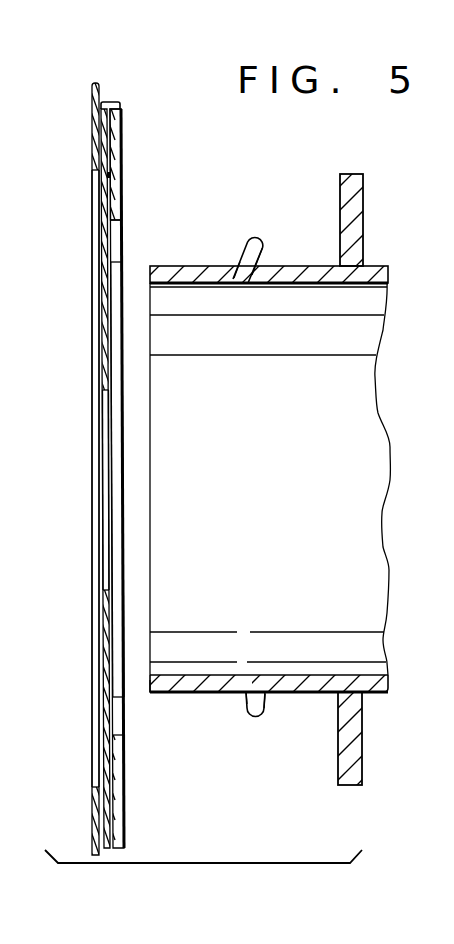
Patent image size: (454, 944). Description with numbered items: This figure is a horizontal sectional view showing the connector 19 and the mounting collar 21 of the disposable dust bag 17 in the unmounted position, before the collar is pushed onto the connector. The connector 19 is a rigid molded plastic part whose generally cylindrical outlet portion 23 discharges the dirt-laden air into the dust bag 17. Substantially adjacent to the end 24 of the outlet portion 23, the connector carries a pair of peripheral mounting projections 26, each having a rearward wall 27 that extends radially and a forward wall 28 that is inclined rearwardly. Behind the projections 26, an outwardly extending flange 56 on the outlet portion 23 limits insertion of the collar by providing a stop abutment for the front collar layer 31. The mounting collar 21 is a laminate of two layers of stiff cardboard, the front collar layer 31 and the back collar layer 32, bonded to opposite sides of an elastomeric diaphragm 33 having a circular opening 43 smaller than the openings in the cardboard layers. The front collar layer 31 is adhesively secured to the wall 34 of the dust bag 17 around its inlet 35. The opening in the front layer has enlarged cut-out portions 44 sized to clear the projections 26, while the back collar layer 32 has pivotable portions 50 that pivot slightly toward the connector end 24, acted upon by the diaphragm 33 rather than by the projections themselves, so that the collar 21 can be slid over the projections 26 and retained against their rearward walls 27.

The disposable dust bag 17 is at (86, 92).
The mounting collar 21 is at (115, 100).
The wall of the disposable dust bag 34 is at (100, 128).
The inlet 35 is at (92, 188).
The front collar layer 31 is at (123, 122).
The back collar layer 32 is at (123, 158).
The enlarged cut-out portions 44 is at (109, 228).
The end of the outlet portion 24 is at (148, 268).
The pivotable portions 50 is at (100, 254).
The elastomeric diaphragm 33 is at (106, 350).
The circular opening 43 is at (110, 498).
The connector 19 is at (156, 701).
The outlet portion 23 is at (184, 693).
The forward walls 28 is at (248, 258).
The rearward walls 27 is at (270, 248).
The peripheral mounting projections 26 is at (253, 240).
The outwardly extending flange 56 is at (359, 213).